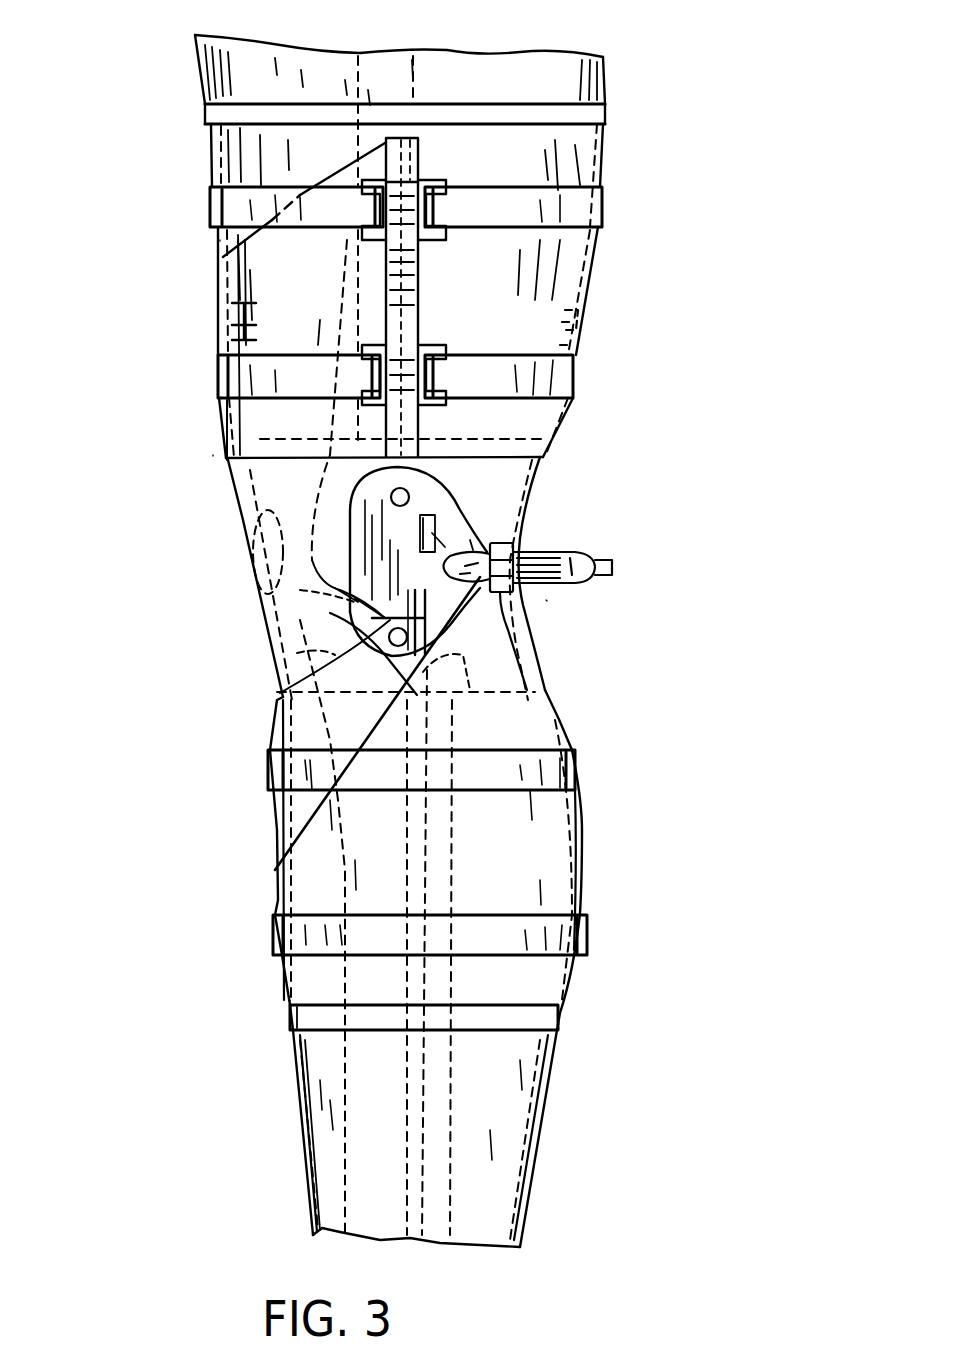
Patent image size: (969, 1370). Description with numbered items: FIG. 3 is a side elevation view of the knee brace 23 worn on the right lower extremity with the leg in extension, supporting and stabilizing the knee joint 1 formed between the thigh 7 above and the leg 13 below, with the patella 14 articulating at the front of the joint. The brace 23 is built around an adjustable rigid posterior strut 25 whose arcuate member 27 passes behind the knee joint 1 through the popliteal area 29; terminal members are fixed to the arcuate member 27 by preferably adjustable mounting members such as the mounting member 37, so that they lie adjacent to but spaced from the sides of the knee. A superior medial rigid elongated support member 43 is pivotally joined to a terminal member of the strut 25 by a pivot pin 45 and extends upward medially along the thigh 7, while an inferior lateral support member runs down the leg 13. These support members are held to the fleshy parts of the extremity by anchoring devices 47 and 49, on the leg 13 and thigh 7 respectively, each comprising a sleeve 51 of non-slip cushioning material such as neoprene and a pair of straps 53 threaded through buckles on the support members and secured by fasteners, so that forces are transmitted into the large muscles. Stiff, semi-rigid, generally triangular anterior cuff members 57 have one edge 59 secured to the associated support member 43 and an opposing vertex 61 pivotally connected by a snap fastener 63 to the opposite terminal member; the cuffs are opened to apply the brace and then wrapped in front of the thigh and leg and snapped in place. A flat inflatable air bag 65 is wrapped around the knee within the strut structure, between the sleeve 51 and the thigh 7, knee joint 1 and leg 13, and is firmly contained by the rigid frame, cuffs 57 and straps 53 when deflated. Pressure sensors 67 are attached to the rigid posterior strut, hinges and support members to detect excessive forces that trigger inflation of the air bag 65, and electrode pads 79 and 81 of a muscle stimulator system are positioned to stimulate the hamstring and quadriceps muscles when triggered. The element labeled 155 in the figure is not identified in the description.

The knee joint 1 is at (296, 632).
The thigh 7 is at (576, 104).
The leg 13 is at (517, 1177).
The patella 14 is at (262, 548).
The knee brace 23 is at (172, 207).
The adjustable rigid posterior strut 25 is at (562, 610).
The arcuate member 27 is at (578, 583).
The popliteal area 29 is at (527, 542).
The mounting member 37 is at (535, 620).
The superior medial rigid elongated support member 43 is at (420, 298).
The pivot pin 45 is at (410, 495).
The anchoring device 47 is at (258, 964).
The anchoring device 49 is at (178, 220).
The sleeve 51 is at (238, 150).
The straps 53 is at (267, 193).
The anterior cuff member 57 is at (260, 418).
The edge 59 is at (373, 147).
The vertex 61 is at (330, 613).
The snap fastener 63 is at (396, 642).
The air bag 65 is at (477, 106).
The pressure sensors 67 is at (410, 498).
The electrode pad 79 is at (563, 330).
The electrode pad 81 is at (243, 317).
The buckle bracket 155 is at (368, 338).